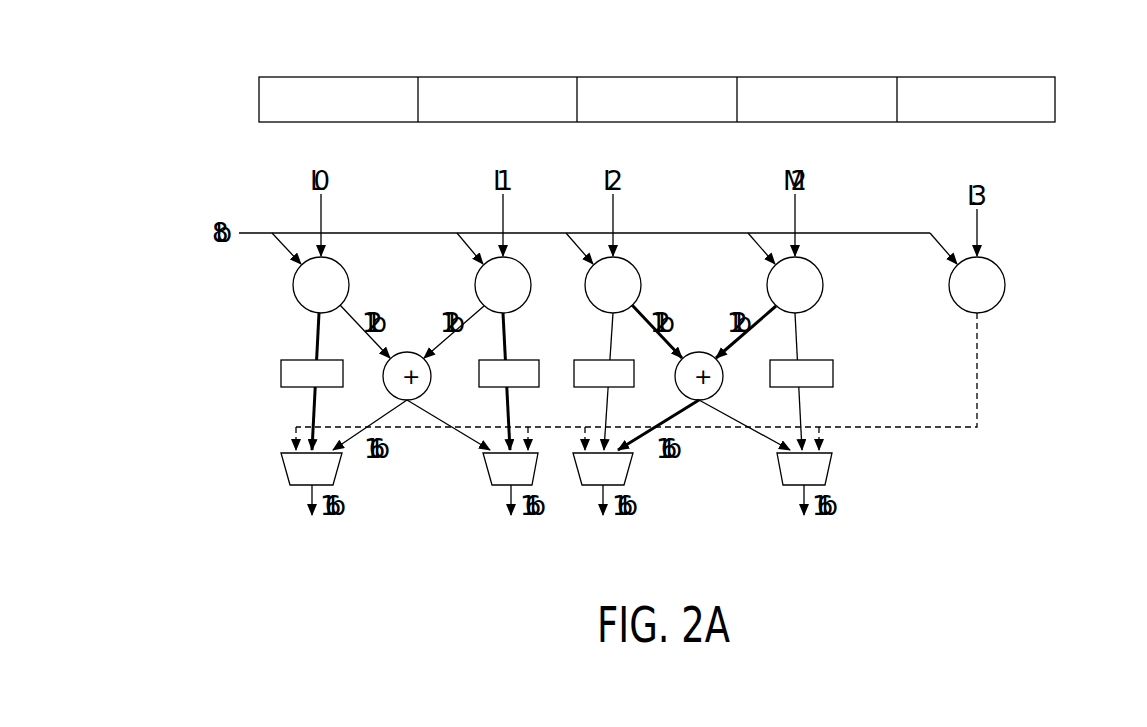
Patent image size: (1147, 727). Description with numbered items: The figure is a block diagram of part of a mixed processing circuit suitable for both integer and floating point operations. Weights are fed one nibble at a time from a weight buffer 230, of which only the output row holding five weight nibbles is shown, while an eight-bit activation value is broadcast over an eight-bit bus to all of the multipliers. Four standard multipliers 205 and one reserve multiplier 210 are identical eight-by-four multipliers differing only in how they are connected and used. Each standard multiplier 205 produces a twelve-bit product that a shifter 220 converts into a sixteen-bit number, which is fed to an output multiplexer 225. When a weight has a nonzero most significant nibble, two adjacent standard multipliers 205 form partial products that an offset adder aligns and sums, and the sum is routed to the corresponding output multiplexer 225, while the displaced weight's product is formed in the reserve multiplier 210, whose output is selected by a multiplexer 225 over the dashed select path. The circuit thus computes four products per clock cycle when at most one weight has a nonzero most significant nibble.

The standard multiplier 205 is at (349, 283).
The reserve multiplier 210 is at (1005, 287).
The shifter 220 is at (280, 370).
The output multiplexer 225 is at (282, 466).
The weight buffer 230 is at (1056, 98).